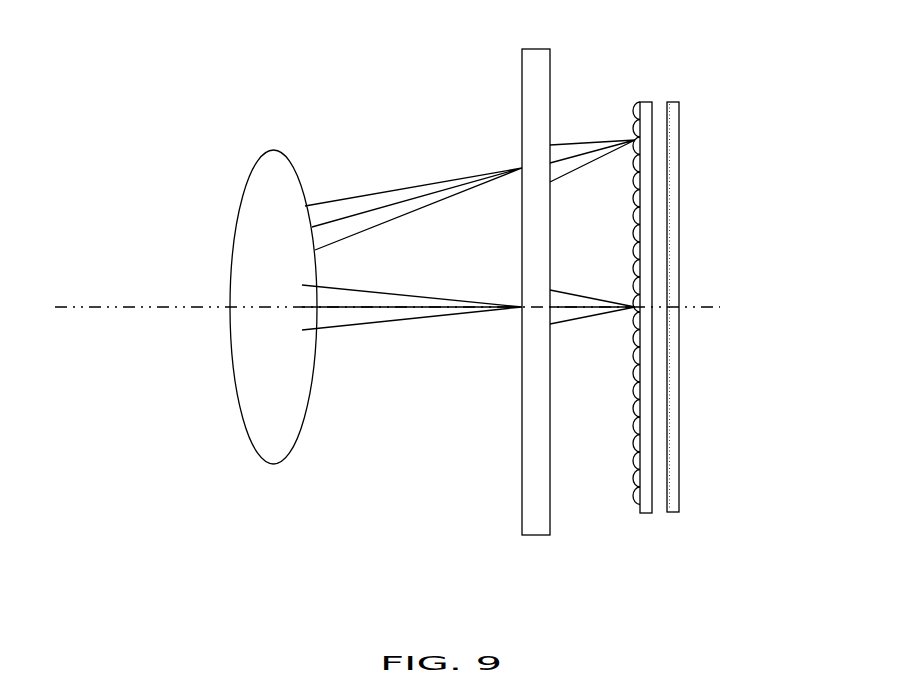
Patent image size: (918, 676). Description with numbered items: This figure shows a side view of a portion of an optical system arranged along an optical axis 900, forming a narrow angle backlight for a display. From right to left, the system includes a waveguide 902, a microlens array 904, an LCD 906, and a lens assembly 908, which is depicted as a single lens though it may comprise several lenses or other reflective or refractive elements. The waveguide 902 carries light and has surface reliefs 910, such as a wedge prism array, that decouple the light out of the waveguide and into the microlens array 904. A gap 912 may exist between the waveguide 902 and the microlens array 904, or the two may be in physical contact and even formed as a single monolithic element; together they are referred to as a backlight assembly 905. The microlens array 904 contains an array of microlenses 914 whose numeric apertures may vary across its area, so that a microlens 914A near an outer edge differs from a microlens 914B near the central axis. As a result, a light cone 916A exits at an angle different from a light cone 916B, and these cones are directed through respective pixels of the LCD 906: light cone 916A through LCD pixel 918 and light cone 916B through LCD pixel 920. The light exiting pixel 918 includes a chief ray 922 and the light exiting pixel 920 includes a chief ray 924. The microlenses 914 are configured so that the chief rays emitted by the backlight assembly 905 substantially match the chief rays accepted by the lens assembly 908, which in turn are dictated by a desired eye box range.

The optical axis 900 is at (98, 307).
The waveguide 902 is at (673, 514).
The microlens array 904 is at (644, 101).
The backlight assembly 905 is at (683, 76).
The LCD 906 is at (540, 49).
The lens assembly 908 is at (293, 163).
The surface reliefs 910 is at (670, 440).
The gap 912 is at (659, 520).
The microlenses 914 is at (633, 460).
The microlens 914A is at (633, 129).
The microlens 914B is at (633, 302).
The light cone 916A is at (615, 152).
The light cone 916B is at (617, 319).
The LCD pixel 918 is at (518, 168).
The LCD pixel 920 is at (519, 309).
The chief ray 922 is at (426, 196).
The chief ray 924 is at (424, 310).